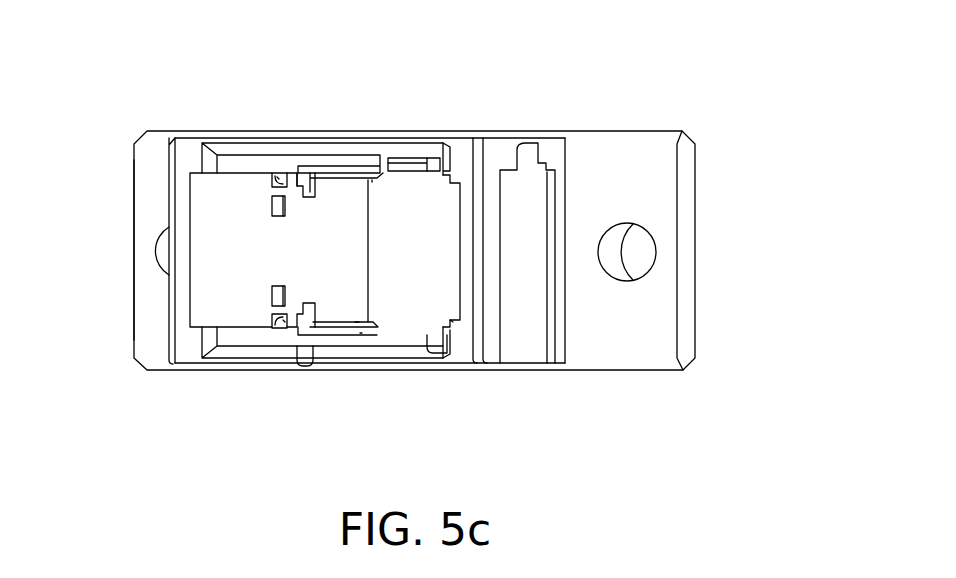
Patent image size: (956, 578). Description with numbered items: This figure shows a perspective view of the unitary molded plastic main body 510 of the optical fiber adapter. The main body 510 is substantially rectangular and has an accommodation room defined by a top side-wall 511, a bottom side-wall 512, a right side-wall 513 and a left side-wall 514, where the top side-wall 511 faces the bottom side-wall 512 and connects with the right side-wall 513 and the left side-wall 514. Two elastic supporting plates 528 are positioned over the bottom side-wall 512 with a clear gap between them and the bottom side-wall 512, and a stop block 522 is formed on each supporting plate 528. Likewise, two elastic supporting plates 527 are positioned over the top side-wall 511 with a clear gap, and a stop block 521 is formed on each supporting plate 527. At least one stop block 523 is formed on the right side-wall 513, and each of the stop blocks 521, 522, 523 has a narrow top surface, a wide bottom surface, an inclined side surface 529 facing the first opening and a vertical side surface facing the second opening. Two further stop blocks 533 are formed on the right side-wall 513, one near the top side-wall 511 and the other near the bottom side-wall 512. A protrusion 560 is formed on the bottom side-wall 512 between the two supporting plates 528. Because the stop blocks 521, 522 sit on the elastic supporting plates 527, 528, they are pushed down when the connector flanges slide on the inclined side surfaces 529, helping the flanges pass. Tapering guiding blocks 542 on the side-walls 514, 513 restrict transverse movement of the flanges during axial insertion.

The main body 510 is at (553, 90).
The top side-wall 511 is at (300, 347).
The bottom side-wall 512 is at (370, 145).
The right side-wall 513 is at (182, 323).
The left side-wall 514 is at (463, 303).
The stop block 521 is at (357, 323).
The stop block 522 is at (328, 180).
The stop block 523 is at (275, 208).
The elastic supporting plate 527 is at (330, 323).
The elastic supporting plate 528 is at (315, 173).
The inclined side surface 529 is at (273, 290).
The stop block 533 is at (303, 190).
The guiding block 542 is at (278, 177).
The protrusion 560 is at (417, 158).